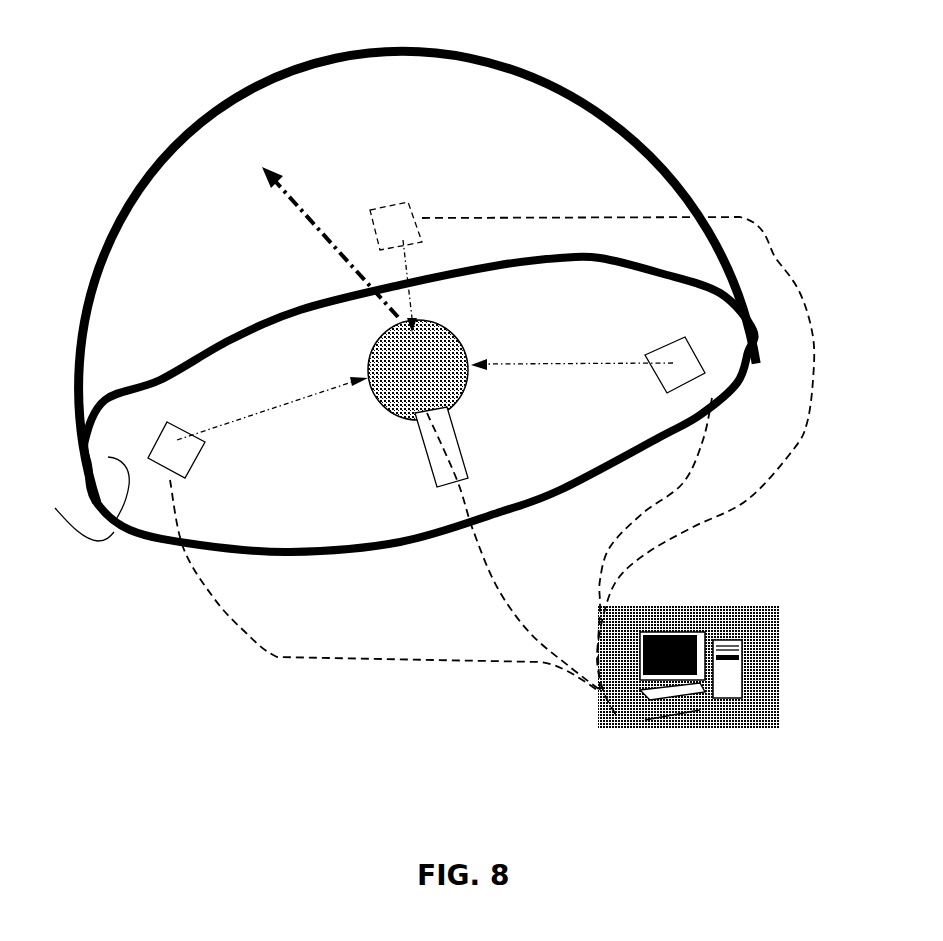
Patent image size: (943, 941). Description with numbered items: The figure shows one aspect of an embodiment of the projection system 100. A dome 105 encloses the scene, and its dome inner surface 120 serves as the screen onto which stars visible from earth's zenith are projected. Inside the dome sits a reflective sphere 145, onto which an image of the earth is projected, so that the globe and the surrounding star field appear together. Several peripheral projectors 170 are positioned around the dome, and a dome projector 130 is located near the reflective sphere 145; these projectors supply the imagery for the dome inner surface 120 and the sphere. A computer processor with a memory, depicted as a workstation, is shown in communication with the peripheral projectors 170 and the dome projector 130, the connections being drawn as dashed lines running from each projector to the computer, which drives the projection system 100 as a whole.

The projection system 100 is at (231, 772).
The dome 105 is at (634, 131).
The dome inner surface 120 is at (74, 499).
The dome projector 130 is at (458, 408).
The reflective sphere 145 is at (403, 413).
The peripheral projectors 170 is at (402, 217).